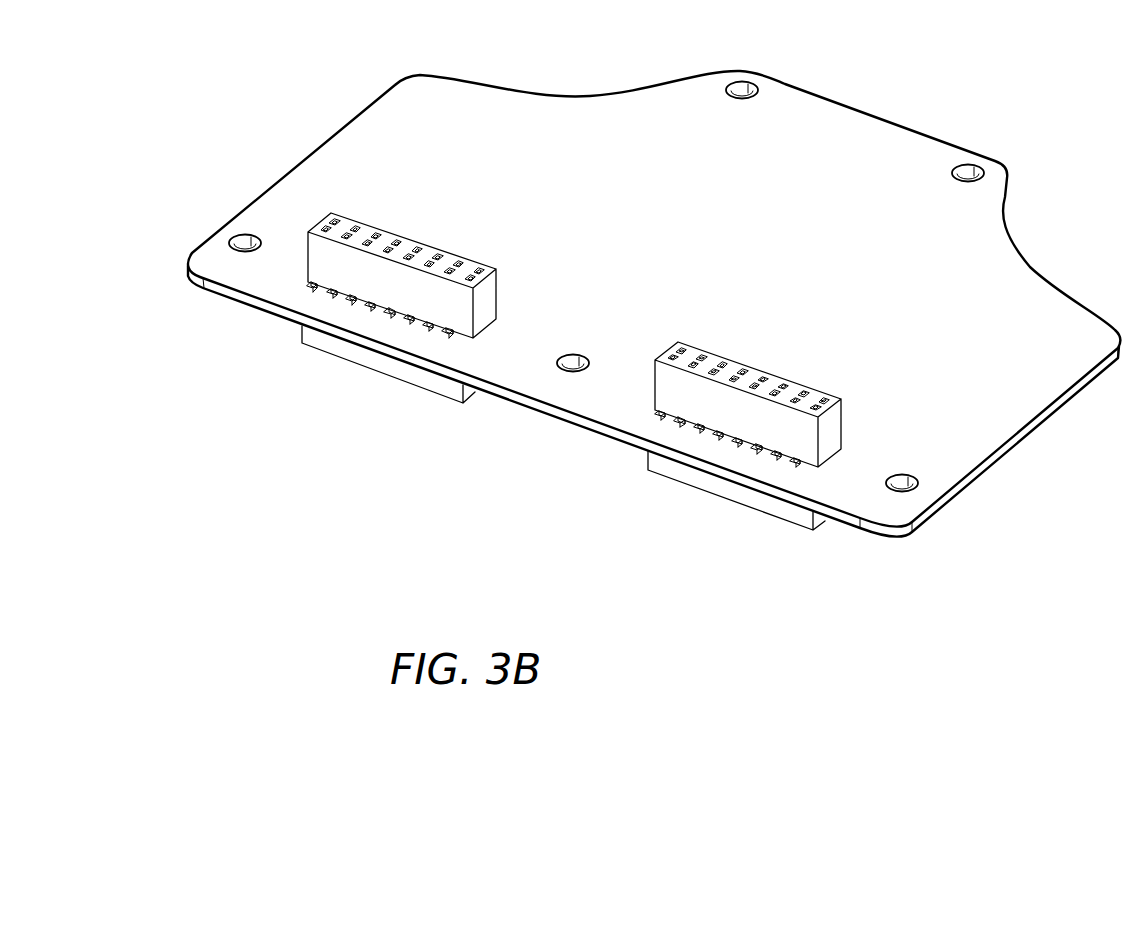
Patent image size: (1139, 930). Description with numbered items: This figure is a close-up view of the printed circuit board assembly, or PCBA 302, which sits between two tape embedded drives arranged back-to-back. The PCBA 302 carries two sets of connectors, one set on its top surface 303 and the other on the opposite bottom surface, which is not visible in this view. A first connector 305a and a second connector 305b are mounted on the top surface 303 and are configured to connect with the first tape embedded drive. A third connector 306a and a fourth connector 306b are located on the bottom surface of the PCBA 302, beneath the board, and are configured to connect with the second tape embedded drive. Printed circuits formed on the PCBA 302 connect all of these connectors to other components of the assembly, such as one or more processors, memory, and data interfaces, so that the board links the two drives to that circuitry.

The PCBA 302 is at (406, 87).
The top surface 303 is at (1010, 427).
The first connector 305a is at (471, 267).
The second connector 305b is at (775, 382).
The third connector 306a is at (372, 370).
The fourth connector 306b is at (740, 495).